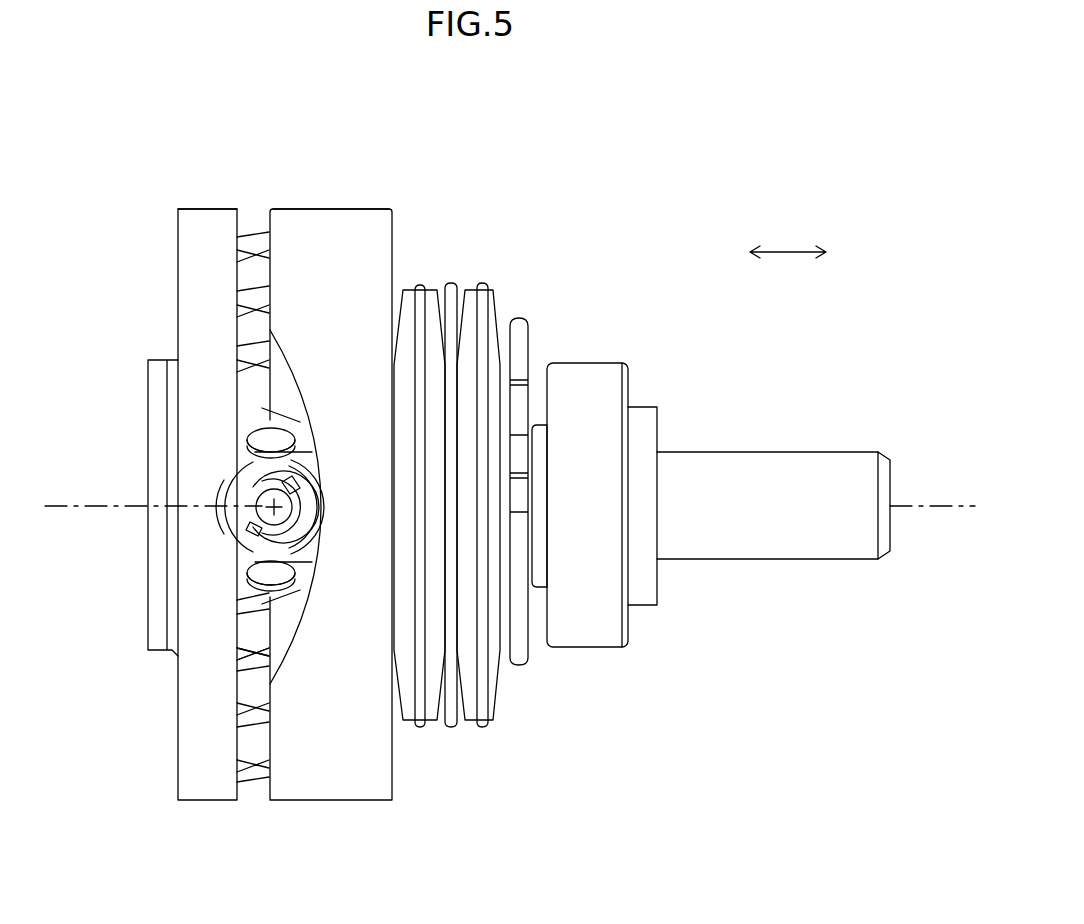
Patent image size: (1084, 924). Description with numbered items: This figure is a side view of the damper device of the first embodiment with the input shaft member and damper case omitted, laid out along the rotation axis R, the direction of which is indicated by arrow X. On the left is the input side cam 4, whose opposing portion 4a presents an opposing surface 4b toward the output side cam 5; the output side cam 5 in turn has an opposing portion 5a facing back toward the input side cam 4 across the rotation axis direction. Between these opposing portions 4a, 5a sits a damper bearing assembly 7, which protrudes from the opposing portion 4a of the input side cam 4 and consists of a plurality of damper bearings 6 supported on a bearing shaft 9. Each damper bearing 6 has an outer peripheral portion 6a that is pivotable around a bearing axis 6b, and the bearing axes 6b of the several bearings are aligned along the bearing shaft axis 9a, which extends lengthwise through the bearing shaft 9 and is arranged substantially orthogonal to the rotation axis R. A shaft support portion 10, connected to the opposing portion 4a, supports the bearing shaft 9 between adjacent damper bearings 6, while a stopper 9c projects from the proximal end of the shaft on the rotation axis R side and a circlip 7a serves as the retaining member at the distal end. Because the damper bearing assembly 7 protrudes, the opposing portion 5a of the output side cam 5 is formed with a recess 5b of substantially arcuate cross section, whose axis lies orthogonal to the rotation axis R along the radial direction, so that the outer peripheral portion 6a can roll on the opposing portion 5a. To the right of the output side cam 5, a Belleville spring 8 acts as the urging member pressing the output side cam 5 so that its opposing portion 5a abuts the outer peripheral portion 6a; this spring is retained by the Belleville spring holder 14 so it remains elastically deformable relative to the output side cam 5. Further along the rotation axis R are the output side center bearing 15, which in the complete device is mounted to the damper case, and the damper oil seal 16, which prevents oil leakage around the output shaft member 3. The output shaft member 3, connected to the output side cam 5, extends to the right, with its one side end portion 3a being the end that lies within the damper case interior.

The output shaft member 3 is at (710, 465).
The one side end portion of the output shaft member 3a is at (858, 451).
The input side cam 4 is at (190, 315).
The opposing portion of the input side cam 4a is at (207, 209).
The opposing surface 4b is at (252, 212).
The output side cam 5 is at (372, 258).
The opposing portion of the output side cam 5a is at (278, 209).
The recess 5b is at (317, 548).
The damper bearing 6 is at (300, 440).
The outer peripheral portion 6a is at (318, 455).
The bearing axis 6b is at (262, 512).
The damper bearing assembly 7 is at (232, 470).
The circlip 7a is at (257, 487).
The Belleville spring 8 is at (455, 284).
The bearing shaft 9 is at (258, 500).
The bearing shaft axis 9a is at (258, 540).
The stopper 9c is at (250, 437).
The shaft support portion 10 is at (247, 660).
The Belleville spring holder 14 is at (520, 362).
The output side center bearing 15 is at (600, 375).
The damper oil seal 16 is at (643, 418).
The rotation axis R is at (903, 507).
The rotation axis direction X is at (788, 238).